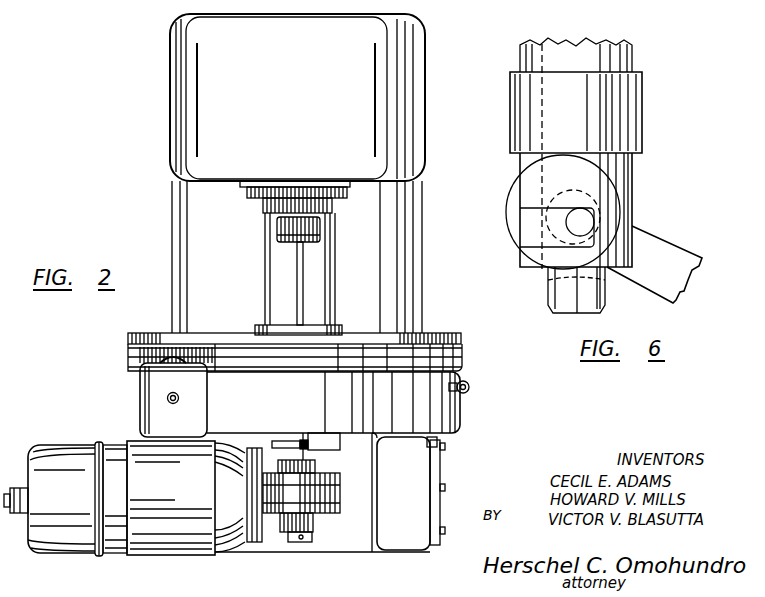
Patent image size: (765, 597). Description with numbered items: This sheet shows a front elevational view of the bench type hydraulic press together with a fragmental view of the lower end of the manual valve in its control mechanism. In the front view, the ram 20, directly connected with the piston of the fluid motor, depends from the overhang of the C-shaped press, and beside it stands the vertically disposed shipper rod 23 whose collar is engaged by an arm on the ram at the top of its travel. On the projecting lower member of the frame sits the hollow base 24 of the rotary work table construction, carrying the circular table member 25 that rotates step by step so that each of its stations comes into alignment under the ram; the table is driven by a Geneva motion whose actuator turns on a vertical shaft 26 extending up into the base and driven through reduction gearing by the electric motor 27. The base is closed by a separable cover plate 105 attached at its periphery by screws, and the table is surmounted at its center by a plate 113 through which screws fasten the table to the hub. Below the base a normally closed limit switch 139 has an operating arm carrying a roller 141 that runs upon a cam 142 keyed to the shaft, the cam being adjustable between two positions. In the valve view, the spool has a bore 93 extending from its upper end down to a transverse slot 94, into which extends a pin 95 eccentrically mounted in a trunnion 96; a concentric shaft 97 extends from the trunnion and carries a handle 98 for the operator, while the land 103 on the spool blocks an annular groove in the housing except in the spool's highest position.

In FIG. 2, the ram 20 is at (313, 241).
In FIG. 2, the shipper rod 23 is at (303, 298).
In FIG. 2, the hollow base 24 is at (288, 400).
In FIG. 2, the circular table member 25 is at (425, 333).
In FIG. 2, the vertical shaft 26 is at (312, 452).
In FIG. 2, the electric motor 27 is at (73, 458).
In FIG. 6, the bore 93 is at (588, 50).
In FIG. 6, the transverse slot 94 is at (525, 237).
In FIG. 6, the pin 95 is at (596, 225).
In FIG. 6, the trunnion 96 is at (514, 196).
In FIG. 6, the concentric shaft 97 is at (592, 208).
In FIG. 6, the handle 98 is at (665, 255).
In FIG. 6, the land 103 is at (515, 96).
In FIG. 2, the cover plate 105 is at (462, 350).
In FIG. 2, the plate 113 is at (332, 326).
In FIG. 2, the limit switch 139 is at (328, 441).
In FIG. 2, the roller 141 is at (300, 444).
In FIG. 2, the cam 142 is at (272, 444).